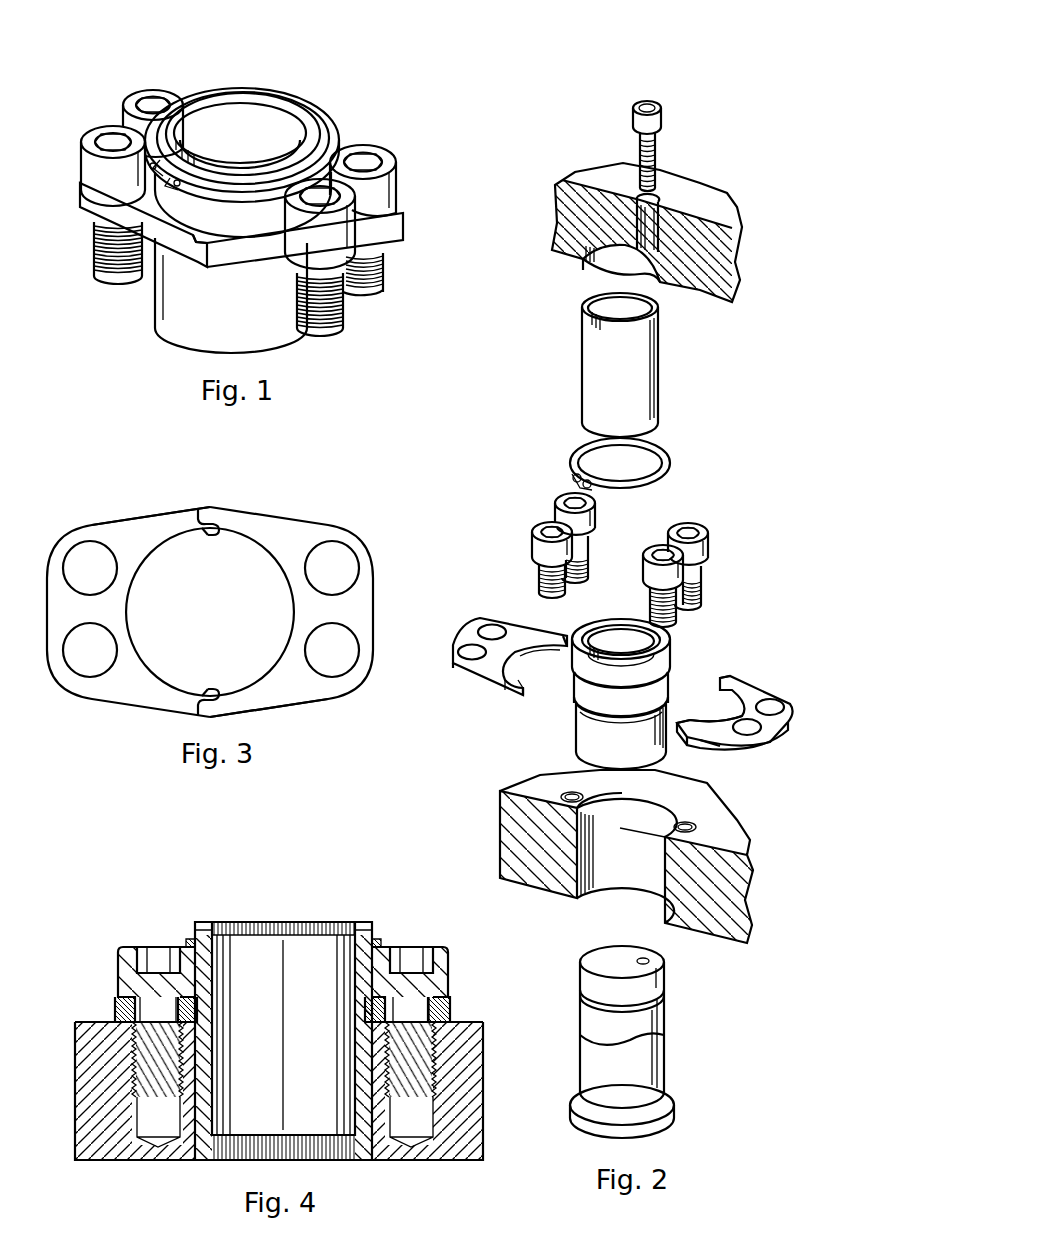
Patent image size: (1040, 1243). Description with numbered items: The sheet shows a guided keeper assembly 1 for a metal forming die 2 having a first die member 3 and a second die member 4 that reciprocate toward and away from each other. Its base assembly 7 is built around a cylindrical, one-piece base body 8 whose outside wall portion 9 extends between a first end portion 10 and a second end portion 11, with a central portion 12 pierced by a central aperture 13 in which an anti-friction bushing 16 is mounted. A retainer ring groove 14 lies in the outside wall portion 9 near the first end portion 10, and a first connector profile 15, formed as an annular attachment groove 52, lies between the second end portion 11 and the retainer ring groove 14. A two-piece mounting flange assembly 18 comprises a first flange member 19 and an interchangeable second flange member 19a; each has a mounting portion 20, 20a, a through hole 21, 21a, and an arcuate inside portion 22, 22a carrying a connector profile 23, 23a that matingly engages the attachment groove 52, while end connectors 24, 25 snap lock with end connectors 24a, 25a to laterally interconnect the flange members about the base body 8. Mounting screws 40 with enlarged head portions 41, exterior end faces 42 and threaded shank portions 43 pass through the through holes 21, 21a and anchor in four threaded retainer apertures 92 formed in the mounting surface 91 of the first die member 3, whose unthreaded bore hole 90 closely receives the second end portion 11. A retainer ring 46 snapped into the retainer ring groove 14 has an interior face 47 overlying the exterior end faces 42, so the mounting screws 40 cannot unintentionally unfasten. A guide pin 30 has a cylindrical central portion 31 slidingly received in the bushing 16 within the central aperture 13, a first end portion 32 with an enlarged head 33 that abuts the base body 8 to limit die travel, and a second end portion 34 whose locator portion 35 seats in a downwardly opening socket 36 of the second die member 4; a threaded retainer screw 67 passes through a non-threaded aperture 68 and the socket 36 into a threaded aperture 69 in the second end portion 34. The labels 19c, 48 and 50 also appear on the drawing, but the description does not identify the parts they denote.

In FIG. 2, the guided keeper assembly 1 is at (614, 615).
In FIG. 2, the metal forming die 2 is at (614, 615).
In FIG. 4, the first die member 3 is at (259, 1100).
In FIG. 2, the first die member 3 is at (642, 856).
In FIG. 2, the second die member 4 is at (655, 218).
In FIG. 1, the base assembly 7 is at (244, 204).
In FIG. 4, the base assembly 7 is at (283, 1021).
In FIG. 1, the base body 8 is at (214, 310).
In FIG. 4, the base body 8 is at (300, 1031).
In FIG. 2, the base body 8 is at (613, 668).
In FIG. 1, the outside wall portion 9 is at (165, 310).
In FIG. 2, the outside wall portion 9 is at (605, 712).
In FIG. 1, the first end portion 10 is at (242, 140).
In FIG. 4, the first end portion 10 is at (283, 898).
In FIG. 2, the first end portion 10 is at (621, 624).
In FIG. 1, the second end portion 11 is at (242, 354).
In FIG. 4, the second end portion 11 is at (380, 1148).
In FIG. 2, the second end portion 11 is at (599, 758).
In FIG. 1, the central portion 12 is at (239, 124).
In FIG. 2, the central portion 12 is at (656, 642).
In FIG. 1, the central aperture 13 is at (243, 100).
In FIG. 4, the central aperture 13 is at (283, 1003).
In FIG. 2, the central aperture 13 is at (621, 611).
In FIG. 2, the retainer ring groove 14 is at (603, 679).
In FIG. 2, the first connector profile 15 is at (592, 709).
In FIG. 1, the anti-friction bushing 16 is at (246, 113).
In FIG. 2, the anti-friction bushing 16 is at (587, 365).
In FIG. 3, the mounting flange assembly 18 is at (227, 617).
In FIG. 1, the first flange member 19 is at (120, 225).
In FIG. 3, the first flange member 19 is at (128, 615).
In FIG. 4, the first flange member 19 is at (132, 984).
In FIG. 2, the first flange member 19 is at (496, 650).
In FIG. 1, the second flange member 19a is at (333, 242).
In FIG. 3, the second flange member 19a is at (311, 616).
In FIG. 2, the second flange member 19a is at (742, 702).
In FIG. 4, the flange foot 19c is at (437, 984).
In FIG. 3, the first mounting portion 20 is at (119, 577).
In FIG. 2, the first mounting portion 20 is at (465, 624).
In FIG. 3, the mounting portion 20a is at (358, 566).
In FIG. 2, the mounting portion 20a is at (771, 741).
In FIG. 3, the first through hole 21 is at (128, 650).
In FIG. 2, the first through hole 21 is at (452, 646).
In FIG. 3, the through hole 21a is at (342, 679).
In FIG. 2, the through hole 21a is at (764, 689).
In FIG. 3, the arcuate inside portion 22 is at (151, 502).
In FIG. 2, the arcuate inside portion 22 is at (449, 683).
In FIG. 3, the arcuate inside wall portion 22a is at (269, 720).
In FIG. 2, the arcuate inside wall portion 22a is at (737, 759).
In FIG. 3, the second connector profile 23 is at (168, 612).
In FIG. 2, the second connector profile 23 is at (537, 628).
In FIG. 3, the connector profile 23a is at (252, 612).
In FIG. 2, the connector profile 23a is at (712, 708).
In FIG. 3, the first end connector 24 is at (220, 550).
In FIG. 2, the first end connector 24 is at (562, 623).
In FIG. 3, the end connector 24a is at (228, 669).
In FIG. 2, the end connector 24a is at (692, 747).
In FIG. 1, the second end connector 25 is at (151, 270).
In FIG. 3, the second end connector 25 is at (174, 727).
In FIG. 2, the second end connector 25 is at (485, 703).
In FIG. 3, the end connector 25a is at (215, 502).
In FIG. 2, the end connector 25a is at (746, 653).
In FIG. 2, the guide pin 30 is at (628, 1020).
In FIG. 2, the central portion 31 is at (645, 1023).
In FIG. 2, the first end portion 32 is at (647, 1041).
In FIG. 2, the enlarged head 33 is at (645, 1111).
In FIG. 2, the second end portion 34 is at (649, 986).
In FIG. 2, the locator portion 35 is at (614, 940).
In FIG. 2, the downwardly opening socket 36 is at (561, 276).
In FIG. 1, the mounting screws 40 is at (241, 198).
In FIG. 4, the mounting screws 40 is at (283, 999).
In FIG. 2, the mounting screws 40 is at (619, 558).
In FIG. 1, the enlarged head portions 41 is at (241, 187).
In FIG. 2, the enlarged head portions 41 is at (649, 546).
In FIG. 1, the exterior end faces 42 is at (255, 124).
In FIG. 2, the exterior end faces 42 is at (632, 529).
In FIG. 1, the threaded shank portions 43 is at (232, 288).
In FIG. 4, the threaded shank portions 43 is at (283, 1047).
In FIG. 2, the threaded shank portions 43 is at (645, 581).
In FIG. 4, the retainer ring 46 is at (307, 917).
In FIG. 2, the retainer ring 46 is at (608, 467).
In FIG. 2, the interior face 47 is at (643, 473).
In FIG. 2, the ring eye 48 is at (549, 477).
In FIG. 2, the ring body 50 is at (648, 463).
In FIG. 2, the attachment groove 52 is at (582, 733).
In FIG. 2, the threaded retainer screw 67 is at (676, 141).
In FIG. 2, the non-threaded aperture 68 is at (601, 191).
In FIG. 2, the threaded aperture 69 is at (634, 933).
In FIG. 4, the bore hole 90 is at (283, 1165).
In FIG. 2, the bore hole 90 is at (672, 793).
In FIG. 4, the mounting surface 91 is at (77, 1010).
In FIG. 2, the mounting surface 91 is at (701, 831).
In FIG. 4, the threaded retainer apertures 92 is at (300, 1149).
In FIG. 2, the threaded retainer apertures 92 is at (667, 812).